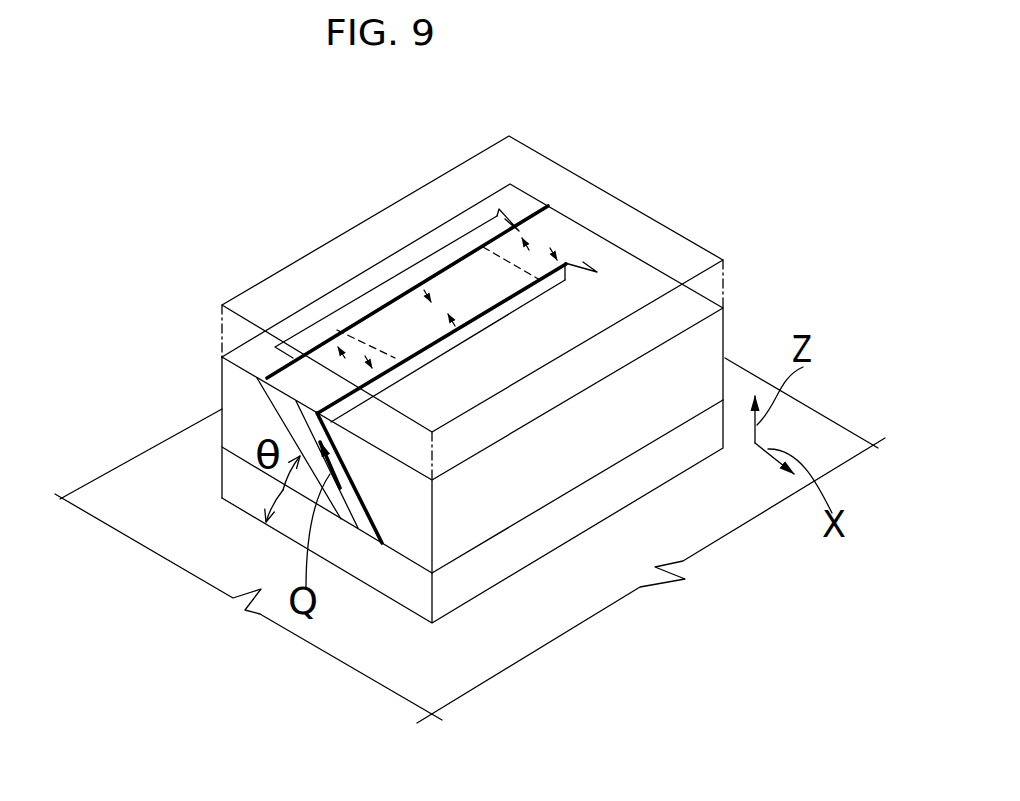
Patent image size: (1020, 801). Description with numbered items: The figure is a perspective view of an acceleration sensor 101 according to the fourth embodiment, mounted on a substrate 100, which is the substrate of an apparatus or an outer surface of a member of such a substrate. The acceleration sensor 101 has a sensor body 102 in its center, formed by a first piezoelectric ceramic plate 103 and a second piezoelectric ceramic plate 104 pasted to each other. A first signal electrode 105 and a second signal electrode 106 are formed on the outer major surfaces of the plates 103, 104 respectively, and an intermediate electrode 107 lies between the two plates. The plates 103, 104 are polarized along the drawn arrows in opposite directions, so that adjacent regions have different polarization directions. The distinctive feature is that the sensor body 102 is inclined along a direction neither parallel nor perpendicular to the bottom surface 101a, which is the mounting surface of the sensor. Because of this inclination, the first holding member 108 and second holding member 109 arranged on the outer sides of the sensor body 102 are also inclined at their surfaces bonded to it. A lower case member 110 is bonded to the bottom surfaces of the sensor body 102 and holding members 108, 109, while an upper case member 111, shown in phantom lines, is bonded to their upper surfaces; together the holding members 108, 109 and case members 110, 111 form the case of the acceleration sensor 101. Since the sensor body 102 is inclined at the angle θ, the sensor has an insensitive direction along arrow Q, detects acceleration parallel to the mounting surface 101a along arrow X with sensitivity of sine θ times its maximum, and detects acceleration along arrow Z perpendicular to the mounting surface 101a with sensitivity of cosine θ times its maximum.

The substrate 100 is at (131, 496).
The acceleration sensor 101 is at (726, 330).
The bottom surface (mounting surface) 101a is at (280, 533).
The sensor body 102 is at (414, 282).
The first piezoelectric ceramic plate 103 is at (336, 333).
The second piezoelectric ceramic plate 104 is at (397, 352).
The first signal electrode 105 is at (563, 263).
The second signal electrode 106 is at (443, 268).
The intermediate electrode 107 is at (483, 278).
The first holding member 108 is at (482, 522).
The second holding member 109 is at (220, 390).
The lower case member 110 is at (557, 530).
The upper case member 111 is at (703, 247).